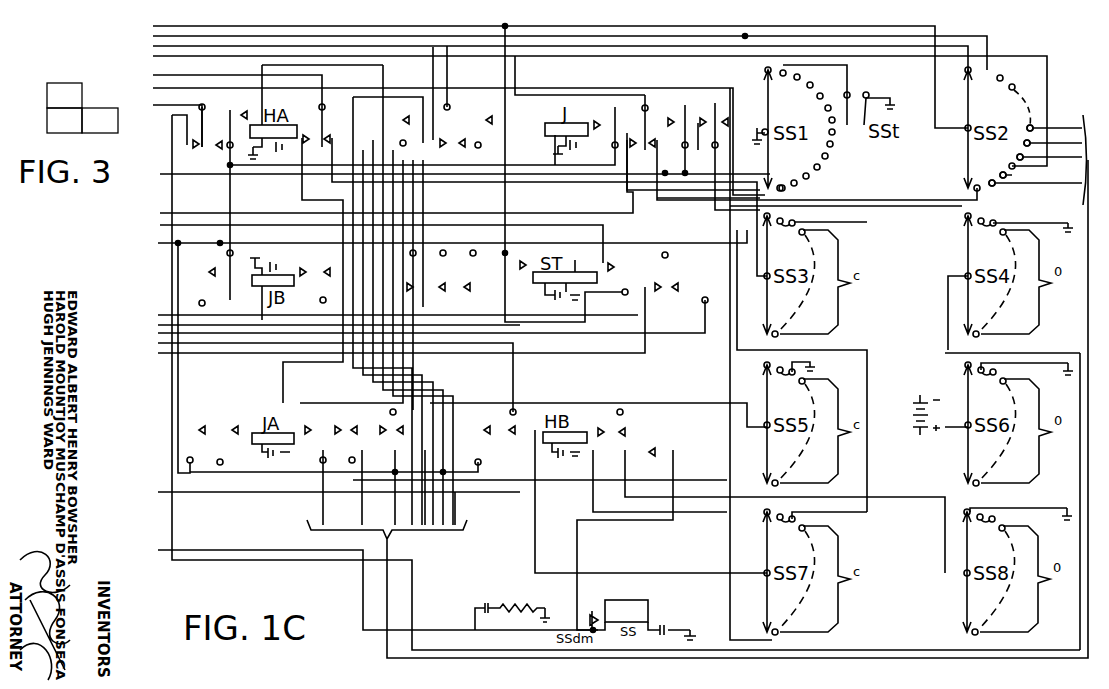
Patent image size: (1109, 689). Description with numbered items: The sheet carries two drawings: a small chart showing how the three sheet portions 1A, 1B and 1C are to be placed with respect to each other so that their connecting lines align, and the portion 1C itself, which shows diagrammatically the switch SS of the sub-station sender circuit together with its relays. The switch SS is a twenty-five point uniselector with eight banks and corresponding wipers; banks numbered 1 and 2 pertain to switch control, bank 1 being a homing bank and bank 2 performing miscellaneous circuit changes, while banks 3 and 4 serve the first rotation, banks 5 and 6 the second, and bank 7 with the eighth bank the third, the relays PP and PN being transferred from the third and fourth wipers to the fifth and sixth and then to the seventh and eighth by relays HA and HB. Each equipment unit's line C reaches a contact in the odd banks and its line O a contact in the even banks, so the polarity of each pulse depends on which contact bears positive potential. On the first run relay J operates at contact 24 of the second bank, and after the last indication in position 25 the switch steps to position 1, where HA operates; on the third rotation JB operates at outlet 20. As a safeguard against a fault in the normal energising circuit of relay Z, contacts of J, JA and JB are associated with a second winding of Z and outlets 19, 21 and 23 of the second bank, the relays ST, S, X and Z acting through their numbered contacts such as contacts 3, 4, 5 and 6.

In FIG. 3, the Fig. 1A portion 1A is at (64, 95).
In FIG. 3, the Fig. 1B portion 1B is at (64, 120).
In FIG. 3, the Fig. 1C portion 1C is at (100, 120).
In FIG. 1C, the relay contact 1 / switch position 1 is at (354, 306).
In FIG. 1C, the relay contact 2 / switch position 2 is at (358, 285).
In FIG. 1C, the relay contact 3 is at (452, 286).
In FIG. 1C, the relay contact 4 is at (661, 311).
In FIG. 1C, the relay contact 5 is at (488, 304).
In FIG. 1C, the relay contact 6 is at (659, 184).
In FIG. 1C, the switch bank number 7 is at (719, 146).
In FIG. 1C, the outlet 19 of SS bank 2 19 is at (748, 320).
In FIG. 1C, the outlet 20 of switch SS 20 is at (701, 327).
In FIG. 1C, the outlet 21 of SS bank 2 21 is at (761, 334).
In FIG. 1C, the outlet 23 of SS bank 2 23 is at (716, 343).
In FIG. 1C, the contact 24 of switch bank SS2 24 is at (732, 352).
In FIG. 1C, the switch position 25 is at (864, 416).